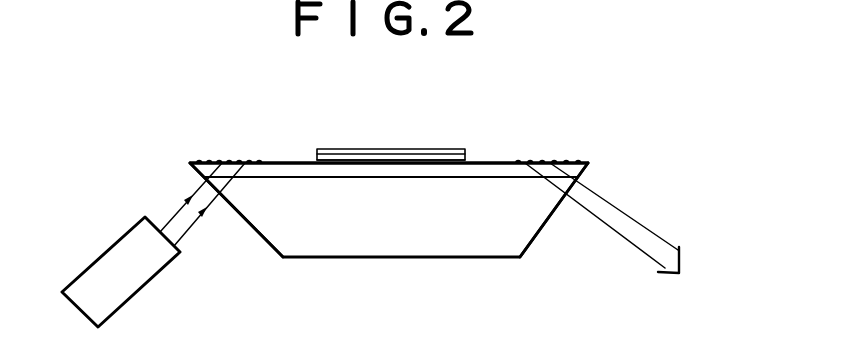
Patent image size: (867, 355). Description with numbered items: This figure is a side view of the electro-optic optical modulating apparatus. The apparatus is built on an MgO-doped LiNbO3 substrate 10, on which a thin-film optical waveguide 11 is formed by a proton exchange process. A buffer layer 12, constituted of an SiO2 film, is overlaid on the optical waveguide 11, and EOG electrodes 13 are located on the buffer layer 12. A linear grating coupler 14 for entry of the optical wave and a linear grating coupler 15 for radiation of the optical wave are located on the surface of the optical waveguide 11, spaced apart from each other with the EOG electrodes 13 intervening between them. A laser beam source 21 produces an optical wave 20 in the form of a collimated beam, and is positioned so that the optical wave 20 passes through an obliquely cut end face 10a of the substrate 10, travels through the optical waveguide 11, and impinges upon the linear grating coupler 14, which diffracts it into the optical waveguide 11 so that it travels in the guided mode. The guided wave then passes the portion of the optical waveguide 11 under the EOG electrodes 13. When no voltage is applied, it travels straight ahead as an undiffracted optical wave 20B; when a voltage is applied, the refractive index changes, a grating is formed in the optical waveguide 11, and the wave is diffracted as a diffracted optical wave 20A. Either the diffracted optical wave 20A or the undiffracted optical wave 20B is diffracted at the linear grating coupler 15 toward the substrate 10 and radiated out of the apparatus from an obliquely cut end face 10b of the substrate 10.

The substrate 10 is at (443, 238).
The obliquely cut end face 10a is at (247, 224).
The obliquely cut end face 10b is at (535, 238).
The thin-film optical waveguide 11 is at (487, 170).
The buffer layer 12 is at (386, 165).
The EOG electrodes 13 is at (423, 149).
The linear grating coupler 14 is at (238, 160).
The linear grating coupler 15 is at (568, 158).
The optical wave 20 is at (167, 220).
The diffracted optical wave 20A is at (625, 215).
The undiffracted optical wave 20B is at (625, 215).
The laser beam source 21 is at (116, 243).